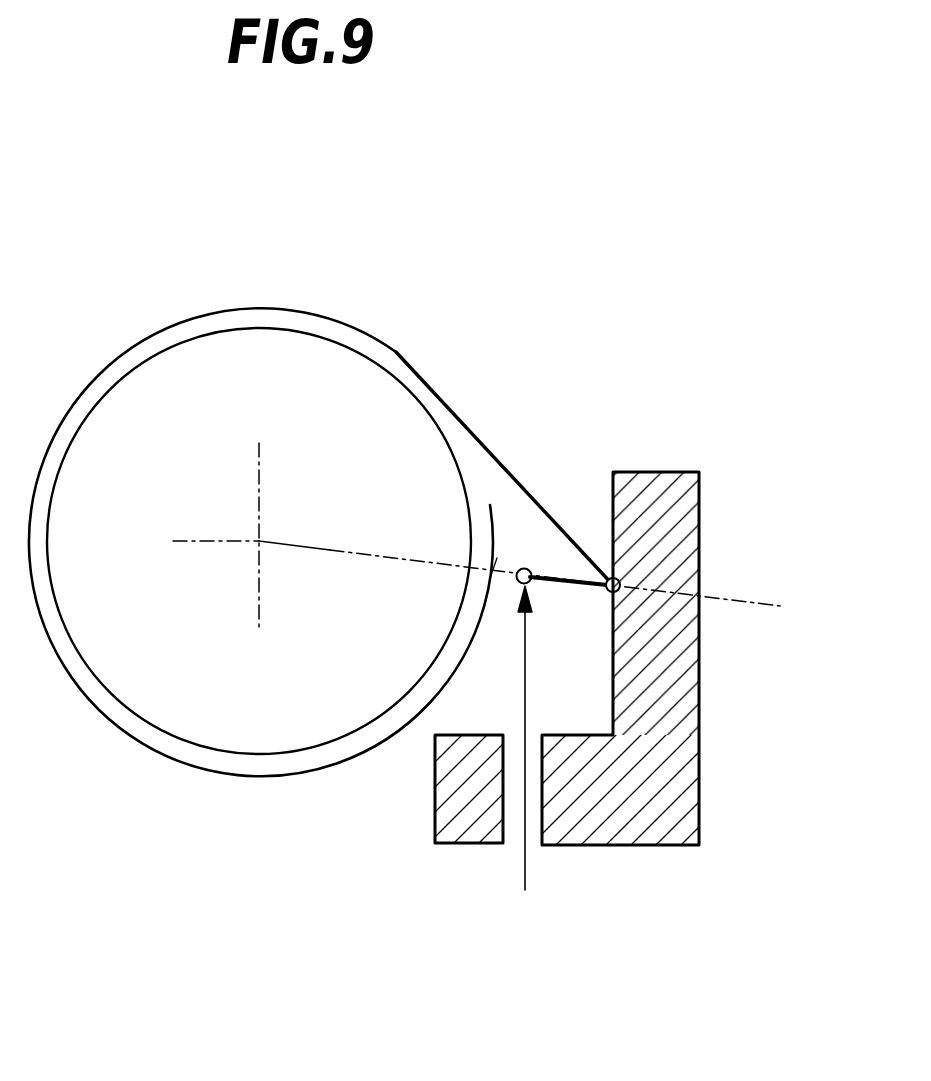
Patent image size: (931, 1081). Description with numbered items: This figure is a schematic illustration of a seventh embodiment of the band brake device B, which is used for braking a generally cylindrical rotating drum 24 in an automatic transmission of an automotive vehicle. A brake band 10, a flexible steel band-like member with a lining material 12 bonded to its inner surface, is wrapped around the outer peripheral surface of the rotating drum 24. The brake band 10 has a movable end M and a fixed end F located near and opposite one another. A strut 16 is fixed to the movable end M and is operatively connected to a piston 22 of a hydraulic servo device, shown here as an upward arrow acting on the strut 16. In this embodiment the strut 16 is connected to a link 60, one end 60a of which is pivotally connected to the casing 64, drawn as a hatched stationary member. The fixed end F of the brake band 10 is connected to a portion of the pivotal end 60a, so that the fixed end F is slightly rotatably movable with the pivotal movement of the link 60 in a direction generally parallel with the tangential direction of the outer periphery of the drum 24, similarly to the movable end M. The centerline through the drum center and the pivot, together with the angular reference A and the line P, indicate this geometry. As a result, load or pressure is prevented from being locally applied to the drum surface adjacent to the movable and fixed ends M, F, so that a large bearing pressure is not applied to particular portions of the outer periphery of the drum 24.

The brake band 10 is at (248, 777).
The lining material 12 is at (313, 753).
The strut 16 is at (513, 567).
The piston 22 is at (525, 878).
The rotating drum 24 is at (350, 393).
The link 60 is at (567, 577).
The pivotal end of link 60a is at (609, 593).
The casing 64 is at (702, 720).
The angle A is at (259, 541).
The band brake device B is at (553, 318).
The fixed end of brake band F is at (611, 572).
The movable end of brake band M is at (495, 584).
The line P is at (455, 405).